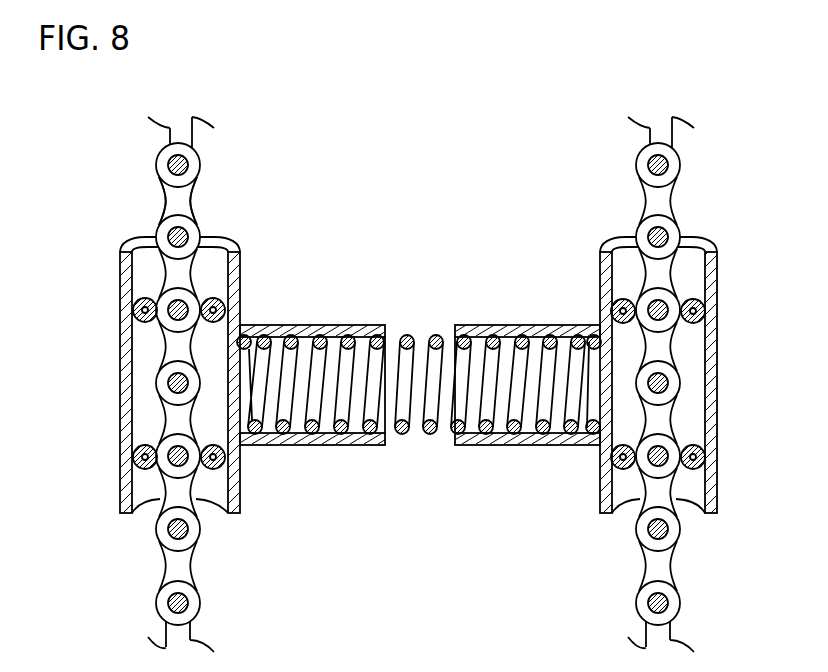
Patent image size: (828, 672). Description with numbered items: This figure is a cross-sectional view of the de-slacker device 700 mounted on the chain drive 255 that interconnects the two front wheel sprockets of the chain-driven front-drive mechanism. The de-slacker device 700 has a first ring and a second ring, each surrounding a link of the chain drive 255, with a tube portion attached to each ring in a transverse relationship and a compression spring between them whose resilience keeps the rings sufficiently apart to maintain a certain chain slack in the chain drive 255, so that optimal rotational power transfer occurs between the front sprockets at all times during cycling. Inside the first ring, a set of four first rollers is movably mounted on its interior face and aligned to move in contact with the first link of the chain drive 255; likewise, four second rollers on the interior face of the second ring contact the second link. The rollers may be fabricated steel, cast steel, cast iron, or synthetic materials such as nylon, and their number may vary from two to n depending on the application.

The chain drive 255 is at (219, 184).
The de-slacker device 700 is at (427, 495).